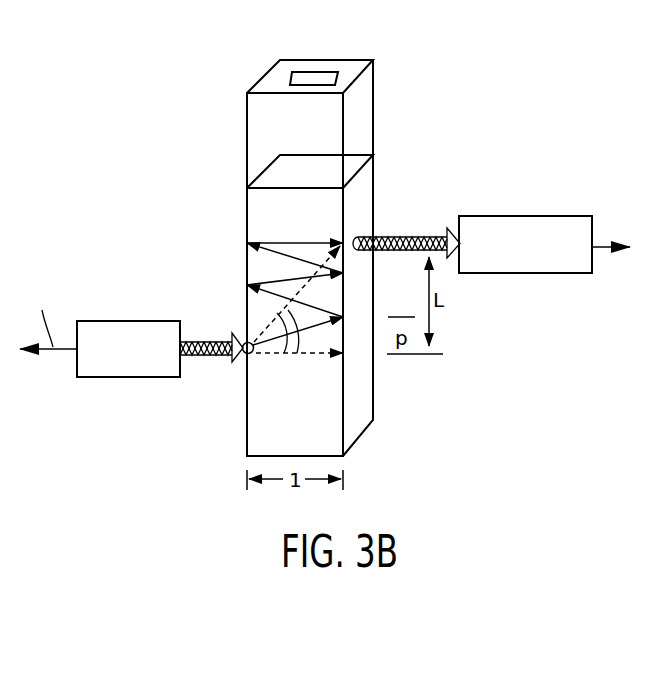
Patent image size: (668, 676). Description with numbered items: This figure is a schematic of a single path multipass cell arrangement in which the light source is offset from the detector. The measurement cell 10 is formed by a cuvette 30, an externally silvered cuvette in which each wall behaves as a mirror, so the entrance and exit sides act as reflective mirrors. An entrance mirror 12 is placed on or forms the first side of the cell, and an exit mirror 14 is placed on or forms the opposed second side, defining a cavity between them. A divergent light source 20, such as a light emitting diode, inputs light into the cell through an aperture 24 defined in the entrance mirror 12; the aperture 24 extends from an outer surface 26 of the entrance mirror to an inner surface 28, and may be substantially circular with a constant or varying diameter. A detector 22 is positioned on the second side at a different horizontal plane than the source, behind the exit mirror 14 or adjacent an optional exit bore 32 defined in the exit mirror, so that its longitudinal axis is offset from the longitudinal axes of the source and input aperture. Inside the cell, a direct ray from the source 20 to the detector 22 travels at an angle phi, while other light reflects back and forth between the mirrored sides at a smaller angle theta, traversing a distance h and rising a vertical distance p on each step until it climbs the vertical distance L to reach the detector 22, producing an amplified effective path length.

The measurement cell 10 is at (487, 85).
The entrance mirror 12 is at (247, 197).
The exit mirror 14 is at (357, 420).
The light source 20 is at (97, 377).
The detector 22 is at (558, 216).
The aperture 24 is at (243, 358).
The outer surface 26 is at (248, 312).
The inner surface 28 is at (248, 410).
The cuvette 30 is at (262, 123).
The exit bore 32 is at (358, 238).